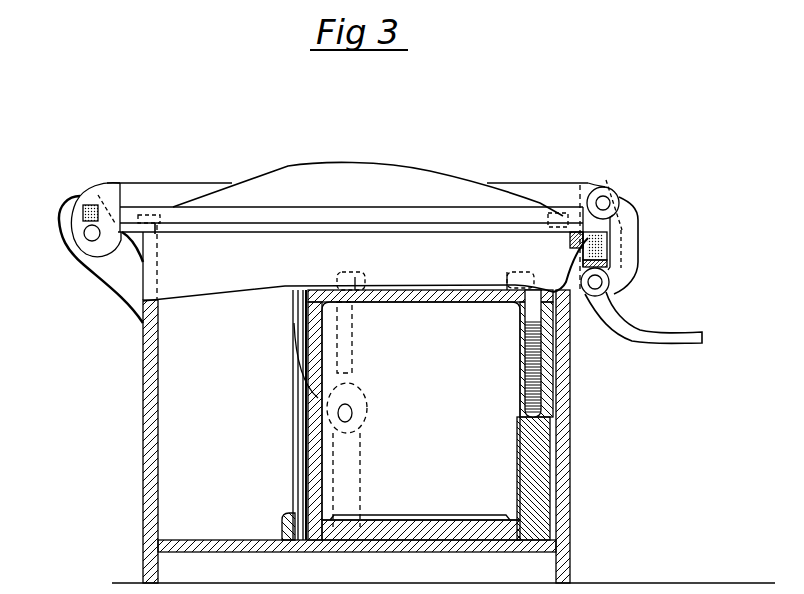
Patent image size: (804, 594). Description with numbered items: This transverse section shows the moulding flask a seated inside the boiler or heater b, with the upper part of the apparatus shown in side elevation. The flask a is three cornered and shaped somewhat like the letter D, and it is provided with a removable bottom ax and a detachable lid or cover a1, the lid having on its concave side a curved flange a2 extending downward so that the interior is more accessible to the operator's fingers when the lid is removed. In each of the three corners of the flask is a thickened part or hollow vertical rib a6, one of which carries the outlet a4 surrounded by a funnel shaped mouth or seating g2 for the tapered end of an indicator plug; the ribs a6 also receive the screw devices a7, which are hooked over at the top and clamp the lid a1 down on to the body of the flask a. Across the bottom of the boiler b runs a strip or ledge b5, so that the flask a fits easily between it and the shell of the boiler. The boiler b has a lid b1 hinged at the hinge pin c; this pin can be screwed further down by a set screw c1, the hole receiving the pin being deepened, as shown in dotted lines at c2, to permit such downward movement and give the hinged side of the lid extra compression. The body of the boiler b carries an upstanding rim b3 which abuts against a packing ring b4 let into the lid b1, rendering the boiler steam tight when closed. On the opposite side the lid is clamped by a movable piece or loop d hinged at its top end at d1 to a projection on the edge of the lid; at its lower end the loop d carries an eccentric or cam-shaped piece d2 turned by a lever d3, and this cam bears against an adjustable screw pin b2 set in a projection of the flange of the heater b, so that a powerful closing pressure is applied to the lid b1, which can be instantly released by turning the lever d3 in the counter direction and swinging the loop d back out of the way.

The boiler b is at (143, 481).
The lid b1 is at (368, 189).
The adjustable screw pin b2 is at (611, 243).
The upstanding rim b3 is at (158, 235).
The packing ring b4 is at (148, 218).
The strip or ledge b5 is at (280, 528).
The moulding flask a is at (293, 487).
The lid or cover a1 is at (415, 300).
The curved flange a2 is at (317, 398).
The outlet a4 is at (352, 417).
The hollow vertical rib a6 is at (517, 452).
The screw devices a7 is at (347, 273).
The removable bottom ax is at (447, 515).
The funnel shaped mouth or seating g2 is at (367, 392).
The hinge pin c is at (75, 231).
The set screw c1 is at (90, 194).
The deepened hole c2 is at (85, 252).
The movable piece or loop d is at (639, 215).
The hinge d1 is at (605, 197).
The eccentric or cam-shaped piece d2 is at (568, 276).
The lever d3 is at (678, 329).